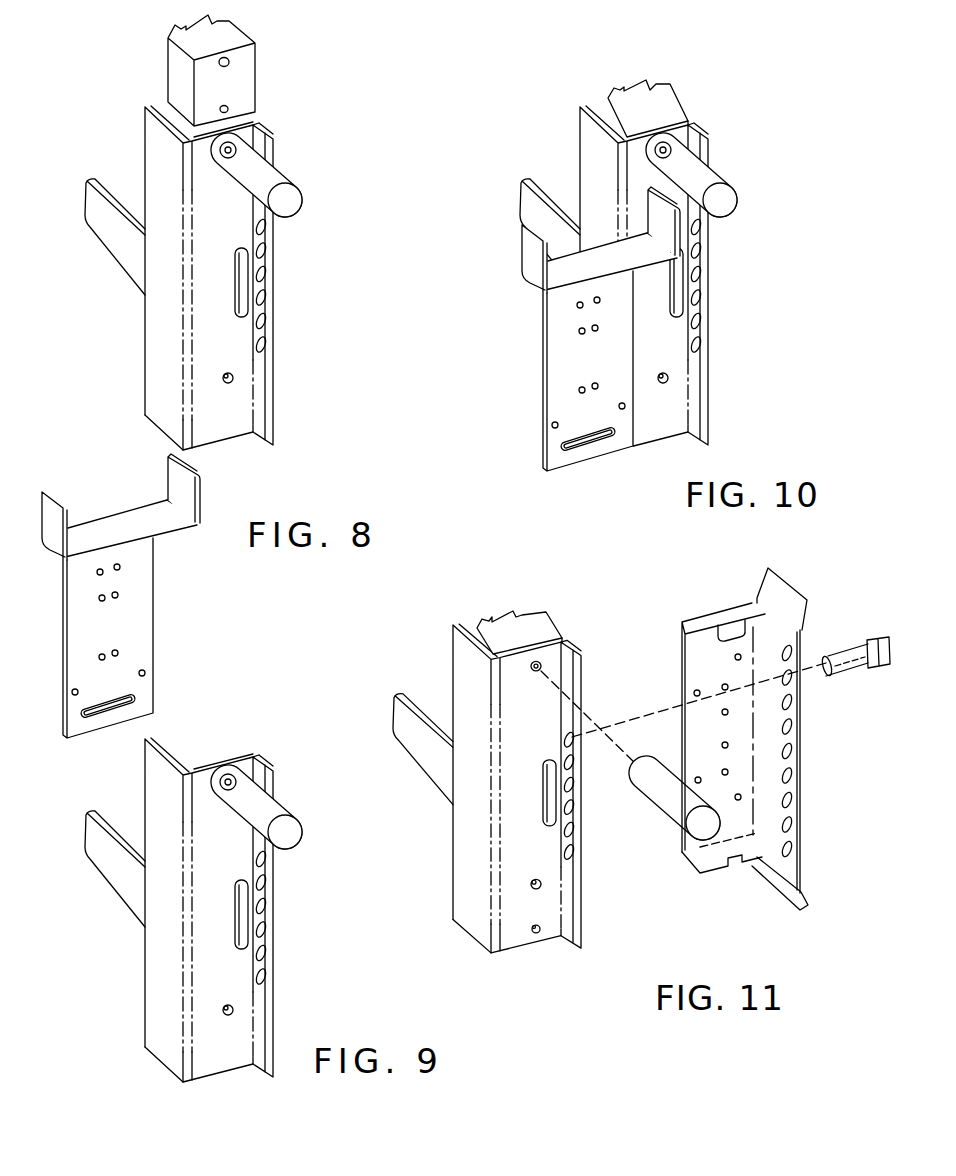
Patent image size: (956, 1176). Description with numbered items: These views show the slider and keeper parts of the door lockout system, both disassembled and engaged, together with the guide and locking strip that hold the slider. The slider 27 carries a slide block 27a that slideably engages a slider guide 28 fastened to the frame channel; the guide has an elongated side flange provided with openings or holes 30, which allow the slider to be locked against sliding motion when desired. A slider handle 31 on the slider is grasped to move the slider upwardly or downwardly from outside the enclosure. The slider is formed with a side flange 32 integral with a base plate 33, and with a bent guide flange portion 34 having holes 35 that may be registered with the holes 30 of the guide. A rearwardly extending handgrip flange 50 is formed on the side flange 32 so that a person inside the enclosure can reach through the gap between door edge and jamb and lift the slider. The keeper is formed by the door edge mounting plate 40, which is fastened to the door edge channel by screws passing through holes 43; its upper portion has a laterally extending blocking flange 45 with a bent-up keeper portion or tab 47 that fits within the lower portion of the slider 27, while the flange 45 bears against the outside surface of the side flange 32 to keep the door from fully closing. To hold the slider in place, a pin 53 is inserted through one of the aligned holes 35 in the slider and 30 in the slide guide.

In FIG. 8, the slider 27 is at (294, 389).
In FIG. 9, the slider 27 is at (148, 944).
In FIG. 10, the slider 27 is at (685, 396).
In FIG. 11, the slider 27 is at (456, 845).
In FIG. 8, the slide block 27a is at (223, 38).
In FIG. 10, the slide block 27a is at (657, 117).
In FIG. 11, the slide block 27a is at (528, 628).
In FIG. 11, the slider guide 28 is at (817, 632).
In FIG. 11, the openings or holes 30 is at (571, 863).
In FIG. 8, the slider handle 31 is at (289, 174).
In FIG. 9, the slider handle 31 is at (287, 802).
In FIG. 10, the slider handle 31 is at (725, 177).
In FIG. 11, the slider handle 31 is at (661, 806).
In FIG. 8, the side flange 32 is at (160, 341).
In FIG. 9, the side flange 32 is at (153, 1027).
In FIG. 10, the side flange 32 is at (634, 278).
In FIG. 11, the side flange 32 is at (470, 920).
In FIG. 8, the base plate 33 is at (228, 420).
In FIG. 9, the base plate 33 is at (230, 1075).
In FIG. 8, the bent guide flange portion 34 is at (273, 304).
In FIG. 9, the bent guide flange portion 34 is at (275, 993).
In FIG. 10, the bent guide flange portion 34 is at (698, 284).
In FIG. 11, the bent guide flange portion 34 is at (581, 934).
In FIG. 9, the holes 35 is at (263, 938).
In FIG. 11, the holes 35 is at (792, 733).
In FIG. 8, the door edge mounting plate 40 is at (147, 648).
In FIG. 10, the door edge mounting plate 40 is at (552, 412).
In FIG. 8, the holes 43 is at (100, 716).
In FIG. 10, the holes 43 is at (587, 450).
In FIG. 8, the blocking flange 45 is at (173, 532).
In FIG. 10, the blocking flange 45 is at (547, 290).
In FIG. 8, the keeper portion or tab 47 is at (200, 478).
In FIG. 10, the keeper portion or tab 47 is at (713, 270).
In FIG. 8, the handgrip flange 50 is at (90, 226).
In FIG. 9, the handgrip flange 50 is at (112, 883).
In FIG. 10, the handgrip flange 50 is at (550, 237).
In FIG. 11, the handgrip flange 50 is at (405, 710).
In FIG. 11, the pin 53 is at (848, 676).